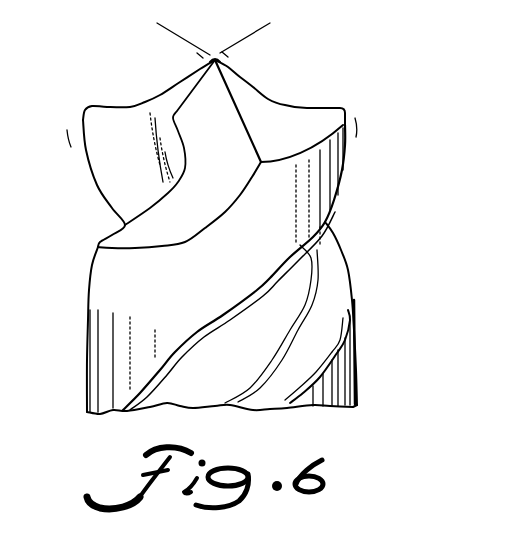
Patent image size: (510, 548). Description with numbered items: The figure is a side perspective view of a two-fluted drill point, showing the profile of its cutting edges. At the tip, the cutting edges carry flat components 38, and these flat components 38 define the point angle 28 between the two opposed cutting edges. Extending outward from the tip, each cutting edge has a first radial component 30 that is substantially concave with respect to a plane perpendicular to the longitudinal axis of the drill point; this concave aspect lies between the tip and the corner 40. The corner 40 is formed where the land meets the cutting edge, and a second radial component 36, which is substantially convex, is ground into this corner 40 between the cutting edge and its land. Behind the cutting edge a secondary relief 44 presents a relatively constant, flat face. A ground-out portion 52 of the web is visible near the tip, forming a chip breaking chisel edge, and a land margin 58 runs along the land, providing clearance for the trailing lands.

The point angle 28 is at (256, 24).
The first radial component 30 is at (147, 78).
The second radial component 36 is at (92, 107).
The flat component 38 is at (197, 53).
The corner 40 is at (85, 113).
The secondary relief 44 is at (300, 146).
The ground-out portion of web 52 is at (188, 87).
The land margin 58 is at (338, 203).